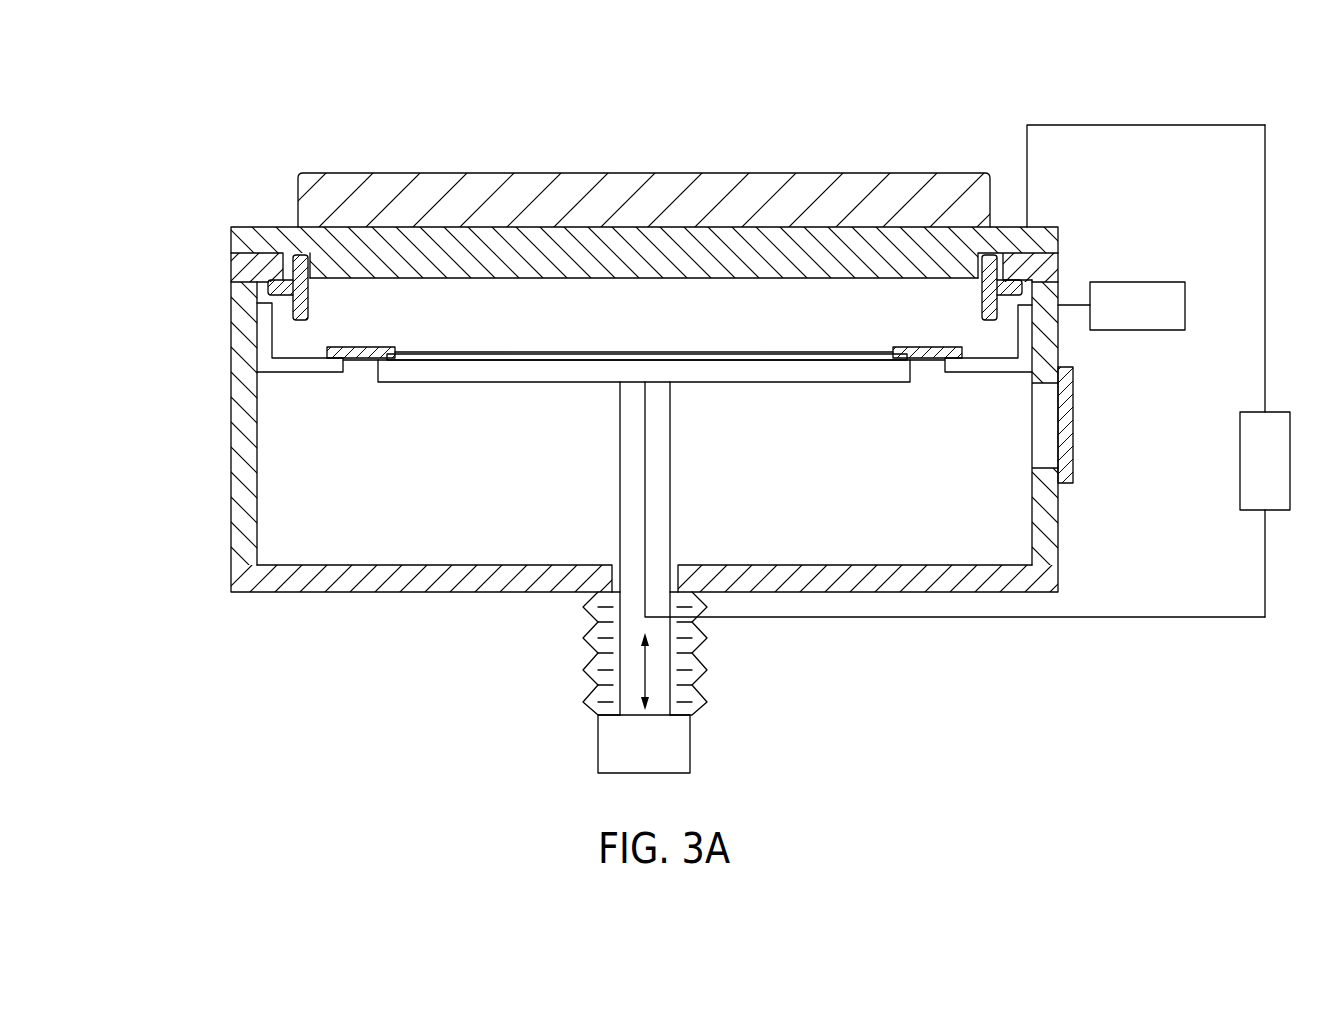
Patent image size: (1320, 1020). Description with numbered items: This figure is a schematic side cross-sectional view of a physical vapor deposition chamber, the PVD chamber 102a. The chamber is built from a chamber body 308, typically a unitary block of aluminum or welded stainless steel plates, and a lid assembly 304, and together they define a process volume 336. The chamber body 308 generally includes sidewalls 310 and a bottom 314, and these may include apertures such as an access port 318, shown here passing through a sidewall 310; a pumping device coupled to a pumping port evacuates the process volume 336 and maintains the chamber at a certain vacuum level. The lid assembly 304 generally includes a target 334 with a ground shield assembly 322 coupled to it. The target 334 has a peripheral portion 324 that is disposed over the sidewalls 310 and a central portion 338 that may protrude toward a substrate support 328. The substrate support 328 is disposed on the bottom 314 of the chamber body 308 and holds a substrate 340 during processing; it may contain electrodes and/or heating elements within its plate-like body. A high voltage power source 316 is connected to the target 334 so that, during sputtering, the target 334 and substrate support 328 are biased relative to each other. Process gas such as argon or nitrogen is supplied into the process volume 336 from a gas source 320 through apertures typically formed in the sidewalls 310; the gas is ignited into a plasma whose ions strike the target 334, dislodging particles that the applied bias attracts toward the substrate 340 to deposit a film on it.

The PVD chamber 102a is at (824, 108).
The lid assembly 304 is at (235, 200).
The chamber body 308 is at (198, 384).
The sidewalls 310 is at (230, 450).
The bottom 314 is at (428, 593).
The power source 316 is at (1240, 468).
The access port 318 is at (1088, 422).
The gas source 320 is at (1173, 281).
The ground shield assembly 322 is at (1082, 254).
The peripheral portion 324 is at (1047, 198).
The substrate support 328 is at (782, 383).
The target 334 is at (762, 281).
The process volume 336 is at (680, 331).
The central portion 338 is at (648, 264).
The substrate 340 is at (568, 352).